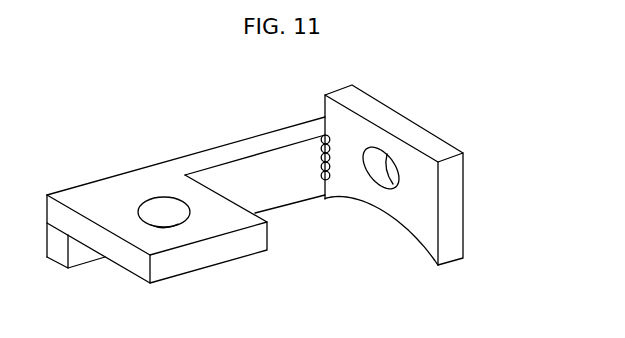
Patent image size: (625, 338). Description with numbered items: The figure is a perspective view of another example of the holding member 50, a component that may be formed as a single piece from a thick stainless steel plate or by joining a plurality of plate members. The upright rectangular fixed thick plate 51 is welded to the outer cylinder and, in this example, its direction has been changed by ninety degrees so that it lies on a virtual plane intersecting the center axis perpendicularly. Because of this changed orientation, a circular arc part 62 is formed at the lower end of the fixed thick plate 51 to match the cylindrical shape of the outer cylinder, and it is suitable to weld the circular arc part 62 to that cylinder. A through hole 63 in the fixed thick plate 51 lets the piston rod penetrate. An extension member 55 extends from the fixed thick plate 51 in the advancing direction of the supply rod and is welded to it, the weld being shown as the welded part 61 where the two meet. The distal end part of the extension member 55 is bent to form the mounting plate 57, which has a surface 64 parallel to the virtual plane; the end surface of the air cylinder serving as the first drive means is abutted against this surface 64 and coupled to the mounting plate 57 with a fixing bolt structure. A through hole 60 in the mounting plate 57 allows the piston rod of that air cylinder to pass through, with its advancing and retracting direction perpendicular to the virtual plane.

The holding member 50 is at (203, 149).
The fixed thick plate 51 is at (402, 125).
The extension member 55 is at (255, 143).
The mounting plate 57 is at (178, 236).
The through hole 60 is at (158, 210).
The welded part 61 is at (321, 160).
The circular arc part 62 is at (407, 234).
The through hole 63 is at (378, 172).
The surface 64 is at (108, 200).